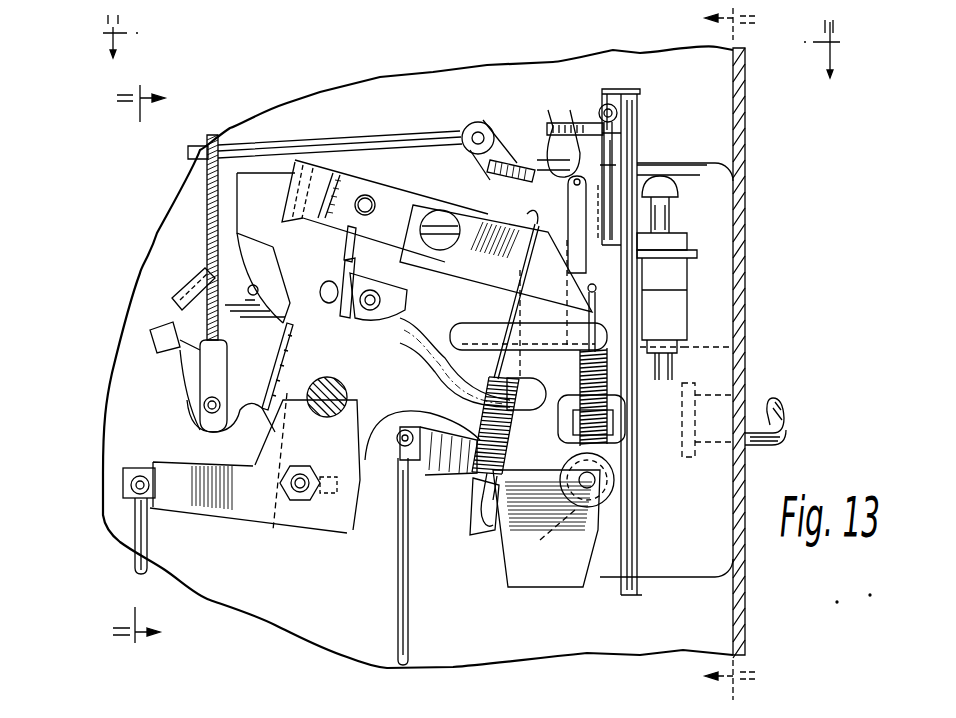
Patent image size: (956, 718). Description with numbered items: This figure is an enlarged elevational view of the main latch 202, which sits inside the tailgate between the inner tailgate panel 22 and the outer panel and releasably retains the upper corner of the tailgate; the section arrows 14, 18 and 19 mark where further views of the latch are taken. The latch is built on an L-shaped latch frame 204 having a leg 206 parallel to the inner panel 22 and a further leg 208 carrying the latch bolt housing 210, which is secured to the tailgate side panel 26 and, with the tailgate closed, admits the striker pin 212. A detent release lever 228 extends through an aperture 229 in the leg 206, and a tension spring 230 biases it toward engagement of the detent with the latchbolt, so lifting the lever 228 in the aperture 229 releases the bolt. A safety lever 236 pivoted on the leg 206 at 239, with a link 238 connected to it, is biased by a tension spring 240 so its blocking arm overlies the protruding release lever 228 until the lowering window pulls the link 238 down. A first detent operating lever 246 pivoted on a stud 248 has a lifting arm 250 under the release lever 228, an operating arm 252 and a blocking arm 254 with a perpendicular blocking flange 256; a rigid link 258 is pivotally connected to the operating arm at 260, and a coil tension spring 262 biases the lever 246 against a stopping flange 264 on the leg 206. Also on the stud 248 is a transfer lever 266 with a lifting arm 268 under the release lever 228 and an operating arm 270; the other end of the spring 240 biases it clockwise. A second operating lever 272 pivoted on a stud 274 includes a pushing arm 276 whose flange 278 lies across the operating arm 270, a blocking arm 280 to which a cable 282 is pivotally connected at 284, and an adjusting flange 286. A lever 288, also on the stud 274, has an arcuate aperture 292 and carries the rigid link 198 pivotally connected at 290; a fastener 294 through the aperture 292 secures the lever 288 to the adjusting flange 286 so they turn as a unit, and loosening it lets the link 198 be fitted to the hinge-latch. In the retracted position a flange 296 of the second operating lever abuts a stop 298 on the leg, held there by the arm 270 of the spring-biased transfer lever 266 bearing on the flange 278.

The section line 14 is at (714, 356).
The section line 18 is at (153, 363).
The section line 19 is at (468, 46).
The inner tailgate panel 22 is at (410, 80).
The tailgate side panel 26 is at (745, 133).
The rigid link 198 is at (147, 537).
The main latch 202 is at (312, 627).
The L-shaped latch frame 204 is at (622, 592).
The frame leg 206 is at (550, 123).
The frame leg 208 is at (647, 570).
The latch bolt housing 210 is at (720, 365).
The striker pin 212 is at (763, 403).
The detent release lever 228 is at (590, 141).
The aperture 229 is at (577, 176).
The tension spring 230 is at (628, 89).
The safety lever 236 is at (558, 566).
The link 238 is at (410, 567).
The pivot 239 is at (595, 480).
The tension spring 240 is at (505, 440).
The first detent operating lever 246 is at (422, 183).
The stud 248 is at (432, 228).
The lifting arm 250 is at (673, 323).
The operating arm 252 is at (527, 183).
The blocking arm 254 is at (358, 187).
The blocking flange 256 is at (315, 166).
The rigid link 258 is at (248, 146).
The pivotal connection 260 is at (484, 124).
The coil tension spring 262 is at (607, 427).
The stopping flange 264 is at (553, 190).
The transfer lever 266 is at (395, 245).
The lifting arm 268 is at (640, 290).
The operating arm 270 is at (433, 290).
The second operating lever 272 is at (275, 425).
The stud 274 is at (273, 383).
The pushing arm 276 is at (462, 364).
The flange 278 is at (373, 273).
The blocking arm 280 is at (338, 284).
The cable 282 is at (207, 183).
The pivotal connection 284 is at (205, 415).
The adjusting flange 286 is at (353, 503).
The lever 288 is at (237, 512).
The pivotal connection 290 is at (130, 487).
The arcuate aperture 292 is at (270, 476).
The fastener 294 is at (300, 507).
The flange 296 is at (177, 307).
The stop 298 is at (160, 337).